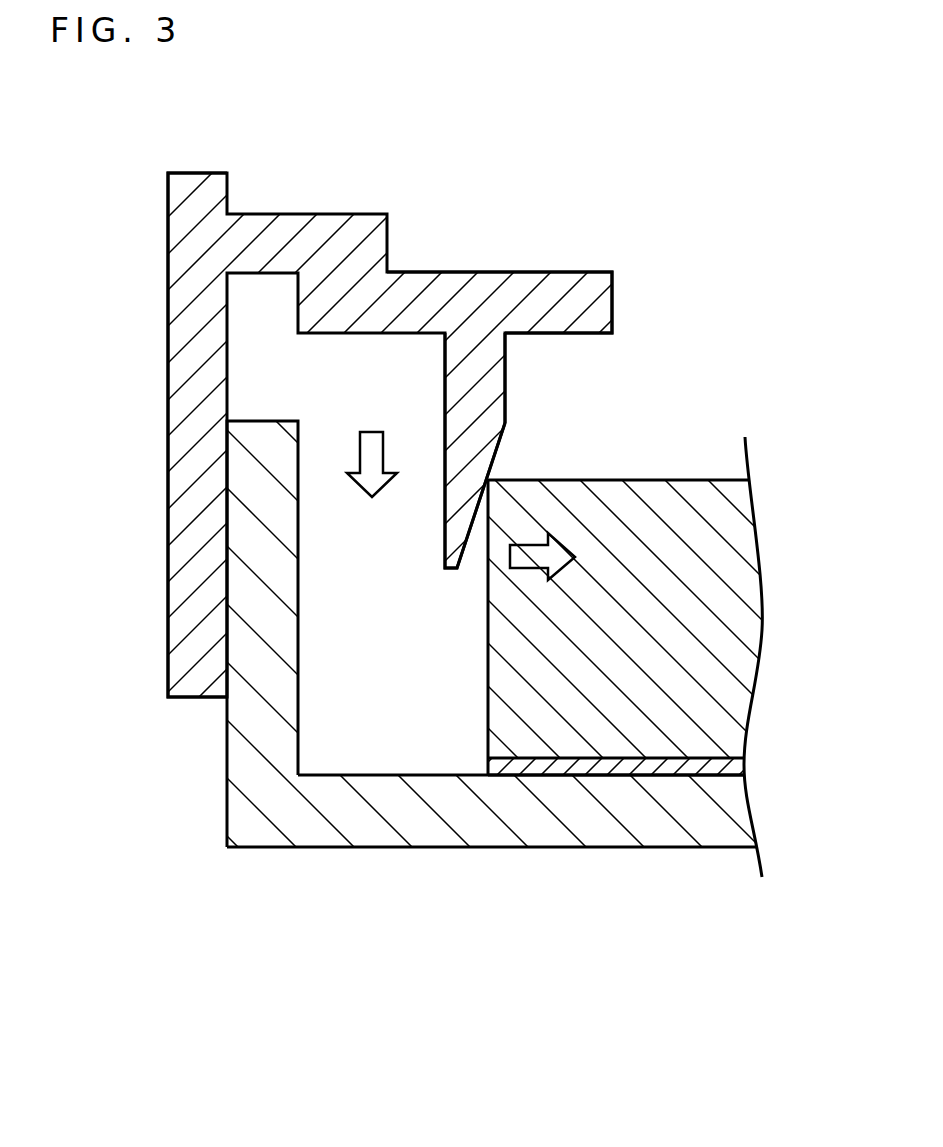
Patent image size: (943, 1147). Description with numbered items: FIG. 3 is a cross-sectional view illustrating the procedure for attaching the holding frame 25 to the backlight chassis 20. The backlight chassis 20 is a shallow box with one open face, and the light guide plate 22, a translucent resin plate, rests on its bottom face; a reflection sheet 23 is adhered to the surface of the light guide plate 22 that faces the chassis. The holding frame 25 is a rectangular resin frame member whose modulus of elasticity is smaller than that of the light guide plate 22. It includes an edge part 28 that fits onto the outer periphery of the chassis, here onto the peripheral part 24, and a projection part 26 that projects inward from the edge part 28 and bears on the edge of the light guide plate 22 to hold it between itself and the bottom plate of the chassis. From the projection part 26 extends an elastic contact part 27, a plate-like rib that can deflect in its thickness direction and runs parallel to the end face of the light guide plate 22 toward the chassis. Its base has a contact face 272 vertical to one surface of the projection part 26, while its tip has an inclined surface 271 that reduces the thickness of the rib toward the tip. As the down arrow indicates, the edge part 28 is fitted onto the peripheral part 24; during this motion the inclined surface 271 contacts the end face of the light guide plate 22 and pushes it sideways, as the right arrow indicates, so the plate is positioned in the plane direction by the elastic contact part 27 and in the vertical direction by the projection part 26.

The backlight chassis 20 is at (612, 847).
The light guide plate 22 is at (682, 478).
The reflection sheet 23 is at (565, 770).
The peripheral part 24 is at (299, 752).
The holding frame 25 is at (418, 228).
The projection part 26 is at (613, 300).
The elastic contact part 27 is at (441, 435).
The inclined surface 271 is at (498, 450).
The contact face 272 is at (506, 376).
The edge part 28 is at (168, 433).